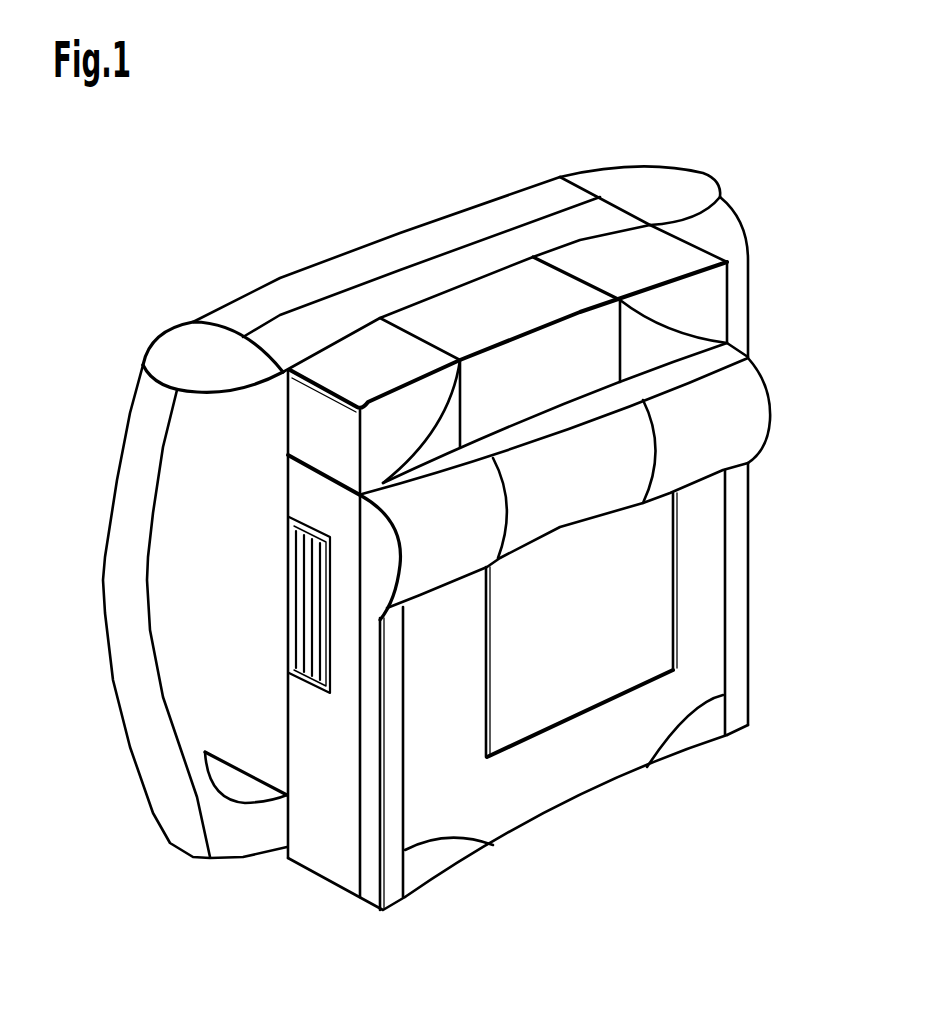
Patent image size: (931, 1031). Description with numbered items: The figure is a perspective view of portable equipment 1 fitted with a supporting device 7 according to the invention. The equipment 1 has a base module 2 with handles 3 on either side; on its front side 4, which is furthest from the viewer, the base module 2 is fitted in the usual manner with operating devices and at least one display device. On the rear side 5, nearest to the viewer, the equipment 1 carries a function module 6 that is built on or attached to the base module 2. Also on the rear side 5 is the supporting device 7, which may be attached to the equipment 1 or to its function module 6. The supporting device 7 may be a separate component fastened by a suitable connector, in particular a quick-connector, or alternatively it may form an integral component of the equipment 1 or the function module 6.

The portable equipment 1 is at (306, 143).
The base module 2 is at (265, 297).
The handles 3 is at (672, 185).
The front side 4 is at (178, 300).
The rear side 5 is at (774, 558).
The function module 6 is at (498, 290).
The supporting device 7 is at (484, 810).